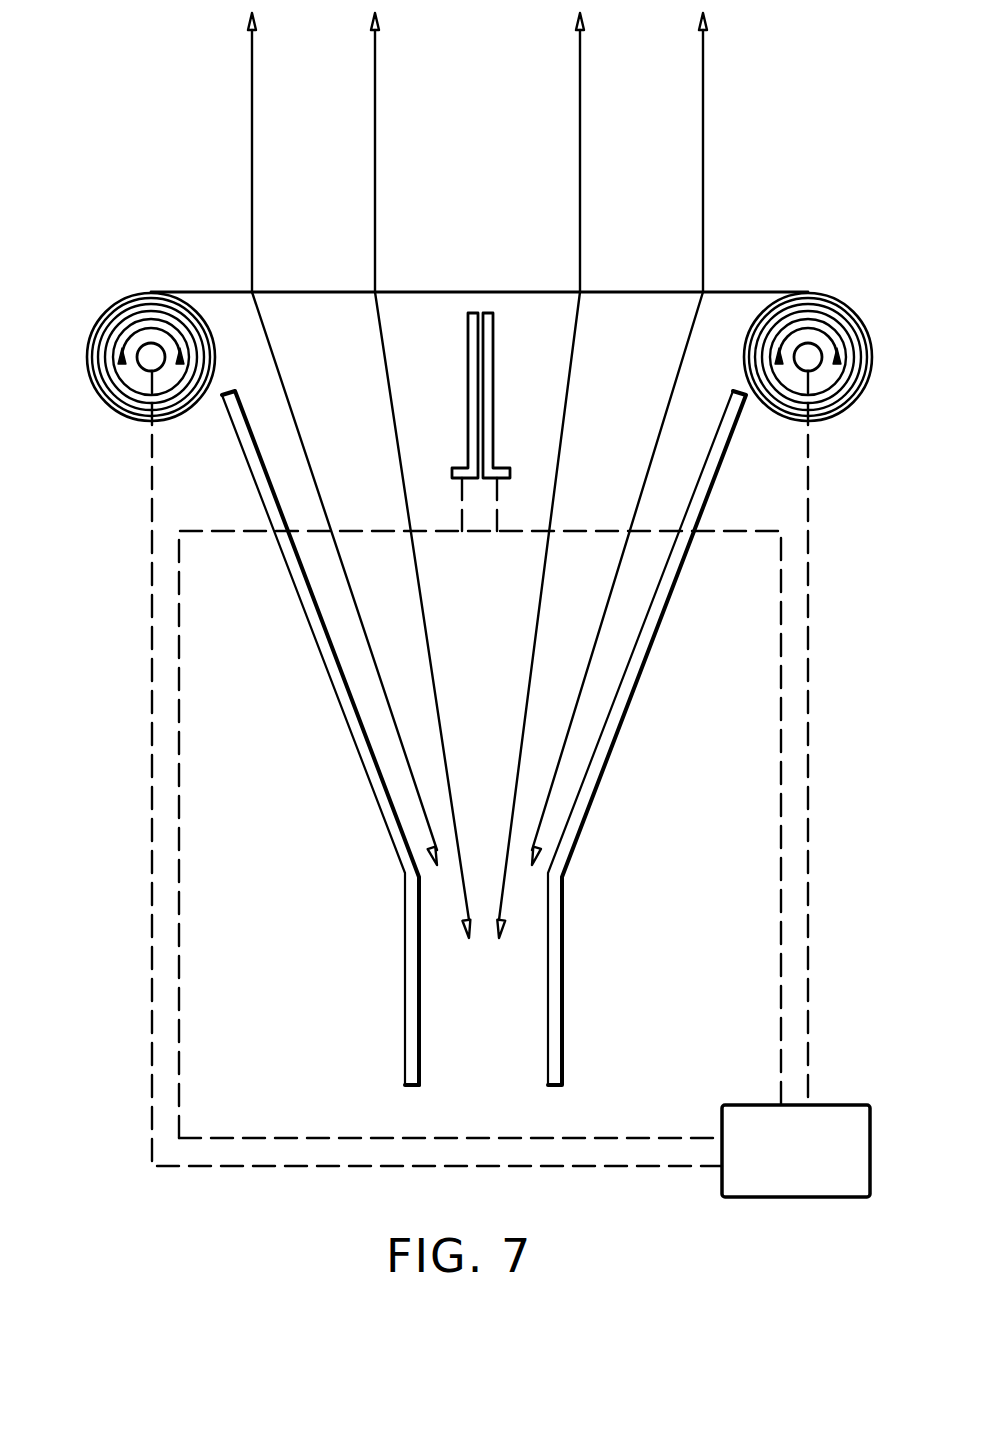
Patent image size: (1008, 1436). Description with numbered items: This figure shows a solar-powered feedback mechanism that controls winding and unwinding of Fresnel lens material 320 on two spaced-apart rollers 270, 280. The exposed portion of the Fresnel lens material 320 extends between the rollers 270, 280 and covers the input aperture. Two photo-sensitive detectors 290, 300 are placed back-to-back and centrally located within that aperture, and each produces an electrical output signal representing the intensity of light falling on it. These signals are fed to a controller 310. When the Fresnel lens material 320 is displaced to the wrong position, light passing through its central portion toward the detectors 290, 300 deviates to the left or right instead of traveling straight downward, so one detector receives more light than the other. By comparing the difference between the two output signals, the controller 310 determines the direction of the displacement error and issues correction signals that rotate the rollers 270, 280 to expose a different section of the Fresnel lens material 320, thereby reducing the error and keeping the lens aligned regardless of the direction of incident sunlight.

The roller 270 is at (144, 367).
The roller 280 is at (822, 368).
The photo-sensitive detector 290 is at (462, 348).
The photo-sensitive detector 300 is at (498, 360).
The controller 310 is at (796, 1151).
The Fresnel lens material 320 is at (749, 291).